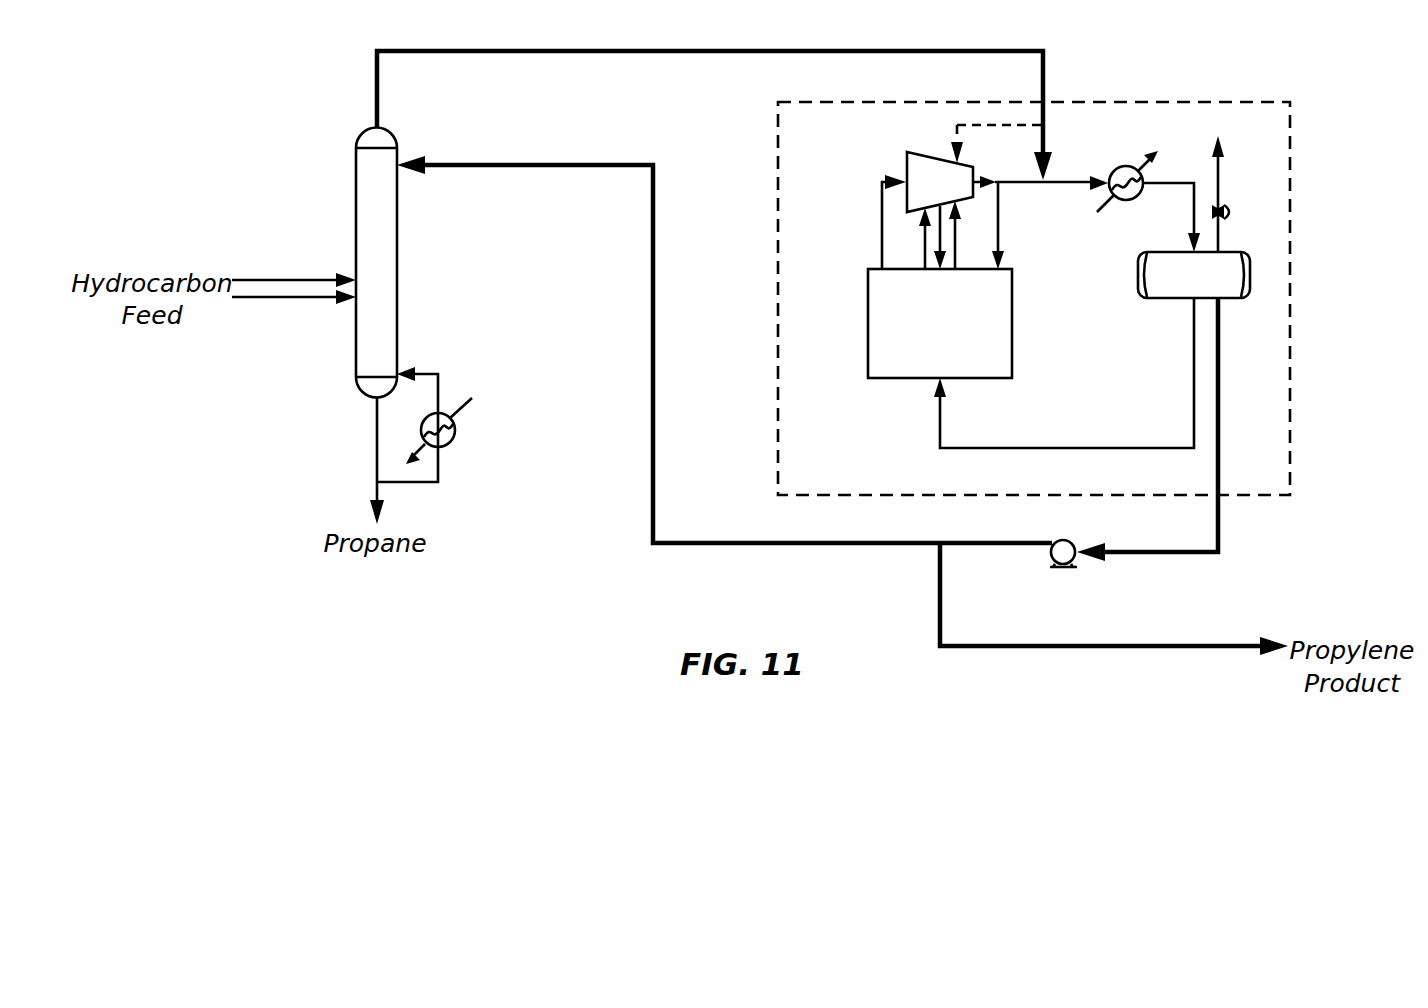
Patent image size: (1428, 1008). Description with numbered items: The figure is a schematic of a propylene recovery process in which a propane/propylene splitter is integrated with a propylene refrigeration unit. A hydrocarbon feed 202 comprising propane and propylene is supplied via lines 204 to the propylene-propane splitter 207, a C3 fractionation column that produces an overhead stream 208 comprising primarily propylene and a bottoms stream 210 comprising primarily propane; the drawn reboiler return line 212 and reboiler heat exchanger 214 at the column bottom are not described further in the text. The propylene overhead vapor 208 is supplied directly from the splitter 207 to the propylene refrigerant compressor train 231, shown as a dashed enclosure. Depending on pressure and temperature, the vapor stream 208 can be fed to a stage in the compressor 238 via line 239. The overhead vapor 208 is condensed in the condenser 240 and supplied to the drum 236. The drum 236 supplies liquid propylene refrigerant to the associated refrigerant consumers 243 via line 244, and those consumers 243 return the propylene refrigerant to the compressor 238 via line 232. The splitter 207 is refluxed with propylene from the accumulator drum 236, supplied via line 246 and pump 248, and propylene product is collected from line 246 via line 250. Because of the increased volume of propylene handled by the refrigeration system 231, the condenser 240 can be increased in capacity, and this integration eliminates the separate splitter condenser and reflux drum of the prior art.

The hydrocarbon feed 202 is at (318, 278).
The feed line 204 is at (318, 300).
The propylene-propane splitter 207 is at (357, 200).
The overhead stream 208 is at (377, 90).
The bottoms stream 210 is at (373, 443).
The reboiler return line 212 is at (430, 484).
The reboiler heat exchanger 214 is at (455, 448).
The propylene refrigerant compressor train 231 is at (1103, 102).
The line 232 is at (882, 205).
The drum 236 is at (1194, 275).
The compressor 238 is at (942, 152).
The line 239 is at (993, 125).
The condenser 240 is at (1128, 165).
The refrigerant consumers 243 is at (868, 325).
The line 244 is at (1060, 448).
The line 246 is at (1220, 520).
The pump 248 is at (1067, 540).
The line 250 is at (975, 648).